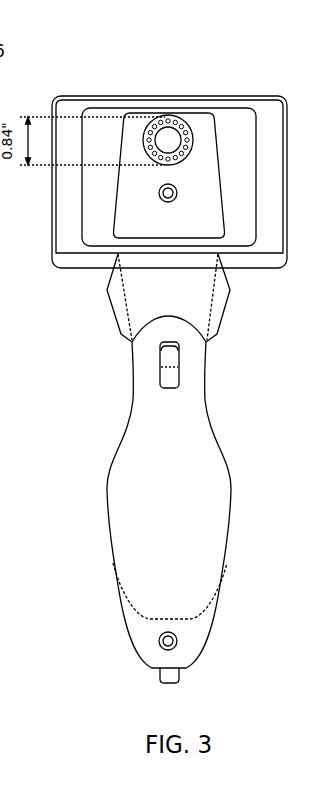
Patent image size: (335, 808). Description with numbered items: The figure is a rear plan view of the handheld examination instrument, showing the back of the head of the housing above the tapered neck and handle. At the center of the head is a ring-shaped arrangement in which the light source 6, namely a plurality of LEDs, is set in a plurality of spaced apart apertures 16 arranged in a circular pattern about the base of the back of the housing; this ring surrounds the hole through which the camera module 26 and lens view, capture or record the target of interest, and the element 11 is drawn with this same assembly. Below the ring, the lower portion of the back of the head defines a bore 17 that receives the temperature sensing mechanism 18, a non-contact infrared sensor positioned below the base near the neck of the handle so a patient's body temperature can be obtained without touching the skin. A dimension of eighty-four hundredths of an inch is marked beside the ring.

The light source 6 is at (224, 96).
The mounting ring 11 is at (224, 96).
The apertures 16 is at (224, 96).
The camera module 26 is at (178, 122).
The bore 17 is at (231, 270).
The temperature sensing mechanism 18 is at (173, 199).